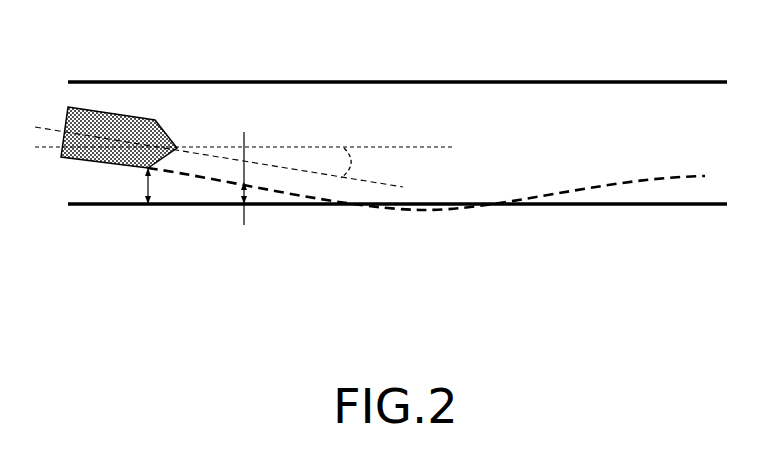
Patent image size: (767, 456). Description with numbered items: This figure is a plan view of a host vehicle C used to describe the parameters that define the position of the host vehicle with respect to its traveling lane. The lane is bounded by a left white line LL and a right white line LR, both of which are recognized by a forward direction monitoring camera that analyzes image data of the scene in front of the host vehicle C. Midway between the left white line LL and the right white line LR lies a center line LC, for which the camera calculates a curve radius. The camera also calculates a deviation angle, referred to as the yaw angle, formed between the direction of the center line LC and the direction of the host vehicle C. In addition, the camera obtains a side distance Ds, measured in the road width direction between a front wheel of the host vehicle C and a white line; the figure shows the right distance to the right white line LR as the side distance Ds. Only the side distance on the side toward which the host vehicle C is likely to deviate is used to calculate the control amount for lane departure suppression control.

The host vehicle C is at (219, 133).
The left white line LL is at (695, 81).
The right white line LR is at (697, 207).
The center line LC is at (422, 147).
The side distance Ds is at (146, 186).